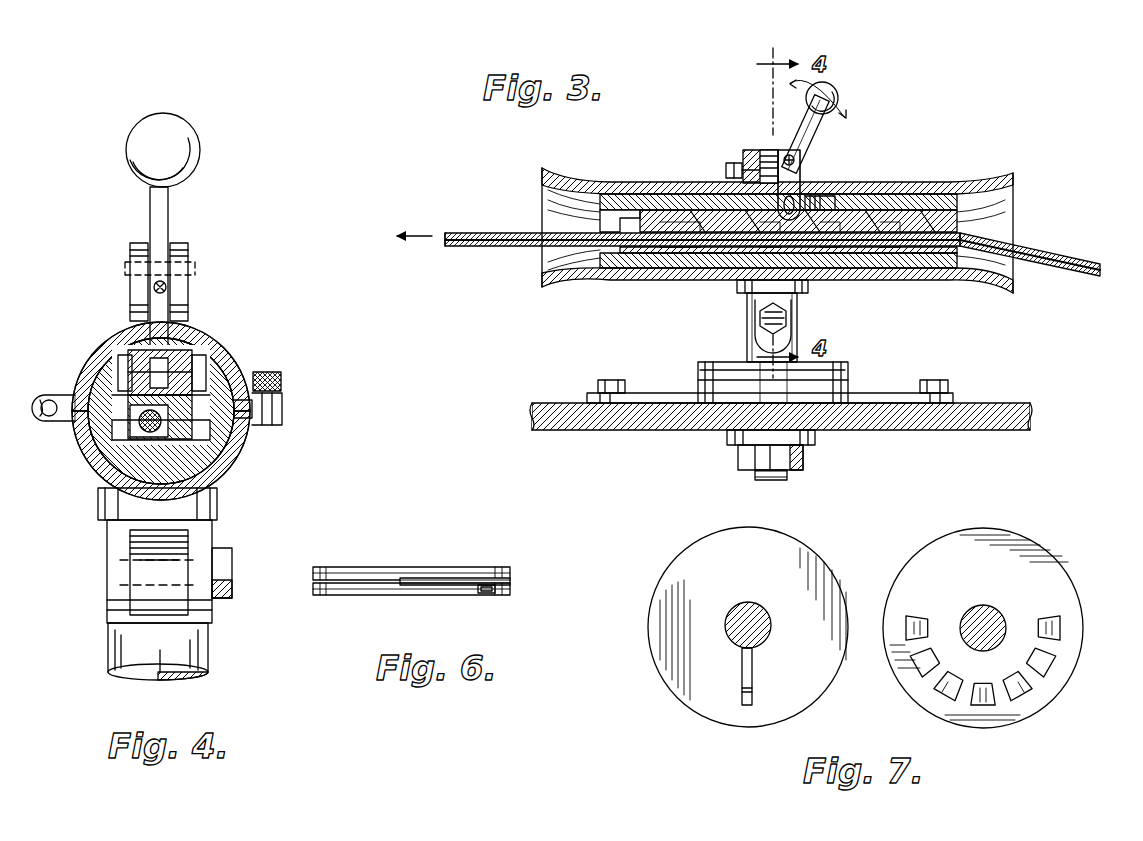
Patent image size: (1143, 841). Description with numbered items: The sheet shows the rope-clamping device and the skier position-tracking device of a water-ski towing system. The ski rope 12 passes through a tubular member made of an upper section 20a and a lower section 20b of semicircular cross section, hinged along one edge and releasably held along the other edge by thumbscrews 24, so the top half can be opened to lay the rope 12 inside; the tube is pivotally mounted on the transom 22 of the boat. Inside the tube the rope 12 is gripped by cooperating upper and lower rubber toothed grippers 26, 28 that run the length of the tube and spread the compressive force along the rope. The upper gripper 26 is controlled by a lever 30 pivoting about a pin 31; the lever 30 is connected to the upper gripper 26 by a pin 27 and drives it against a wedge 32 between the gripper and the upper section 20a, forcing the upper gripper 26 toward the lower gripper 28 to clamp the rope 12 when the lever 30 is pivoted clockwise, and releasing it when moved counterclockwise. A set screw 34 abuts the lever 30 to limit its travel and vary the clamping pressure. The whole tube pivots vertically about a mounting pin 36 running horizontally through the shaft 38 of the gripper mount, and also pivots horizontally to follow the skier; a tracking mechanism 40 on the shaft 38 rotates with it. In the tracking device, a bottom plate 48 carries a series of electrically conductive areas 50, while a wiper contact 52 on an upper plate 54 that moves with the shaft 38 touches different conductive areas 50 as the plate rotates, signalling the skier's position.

In FIG. 4, the ski rope 12 is at (112, 430).
In FIG. 3, the ski rope 12 is at (1045, 256).
In FIG. 4, the upper section 20a is at (205, 340).
In FIG. 3, the upper section 20a is at (888, 184).
In FIG. 4, the lower section 20b is at (224, 474).
In FIG. 3, the lower section 20b is at (962, 278).
In FIG. 3, the transom 22 is at (985, 404).
In FIG. 4, the thumbscrews 24 is at (283, 382).
In FIG. 4, the upper gripper 26 is at (212, 372).
In FIG. 3, the upper gripper 26 is at (798, 221).
In FIG. 4, the pin 27 is at (122, 352).
In FIG. 3, the pin 27 is at (802, 200).
In FIG. 4, the lower gripper 28 is at (222, 438).
In FIG. 3, the lower gripper 28 is at (898, 270).
In FIG. 4, the lever 30 is at (166, 212).
In FIG. 3, the lever 30 is at (840, 110).
In FIG. 4, the pin 31 is at (190, 268).
In FIG. 3, the pin 31 is at (800, 165).
In FIG. 3, the wedge 32 is at (672, 196).
In FIG. 4, the set screw 34 is at (168, 289).
In FIG. 3, the set screw 34 is at (738, 162).
In FIG. 4, the mounting pin 36 is at (232, 574).
In FIG. 3, the mounting pin 36 is at (788, 320).
In FIG. 4, the shaft 38 is at (200, 646).
In FIG. 3, the shaft 38 is at (747, 345).
In FIG. 3, the tracking mechanism 40 is at (850, 375).
In FIG. 6, the bottom plate 48 is at (512, 590).
In FIG. 7, the bottom plate 48 is at (1008, 545).
In FIG. 6, the conductive areas 50 is at (477, 595).
In FIG. 7, the conductive areas 50 is at (1062, 622).
In FIG. 6, the wiper contact 52 is at (438, 577).
In FIG. 7, the wiper contact 52 is at (742, 698).
In FIG. 6, the upper plate 54 is at (500, 570).
In FIG. 7, the upper plate 54 is at (790, 556).